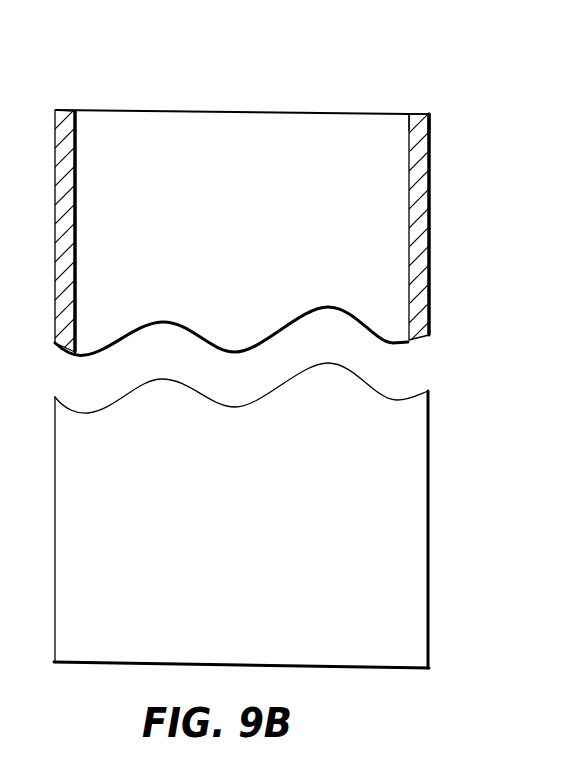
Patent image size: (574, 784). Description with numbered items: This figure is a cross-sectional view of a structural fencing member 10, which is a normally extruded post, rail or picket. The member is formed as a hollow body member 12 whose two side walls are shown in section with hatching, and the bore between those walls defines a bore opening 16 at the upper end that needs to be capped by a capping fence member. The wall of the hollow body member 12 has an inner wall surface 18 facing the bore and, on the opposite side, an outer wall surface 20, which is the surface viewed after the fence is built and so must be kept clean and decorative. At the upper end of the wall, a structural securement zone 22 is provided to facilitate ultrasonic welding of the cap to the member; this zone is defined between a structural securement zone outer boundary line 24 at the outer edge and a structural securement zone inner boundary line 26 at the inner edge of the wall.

The structural fencing member 10 is at (423, 210).
The hollow body member 12 is at (56, 106).
The bore opening 16 is at (236, 111).
The inner wall surface 18 is at (76, 260).
The outer wall surface 20 is at (430, 278).
The structural securement zone 22 is at (418, 114).
The structural securement zone outer boundary line 24 is at (432, 118).
The structural securement zone inner boundary line 26 is at (409, 114).